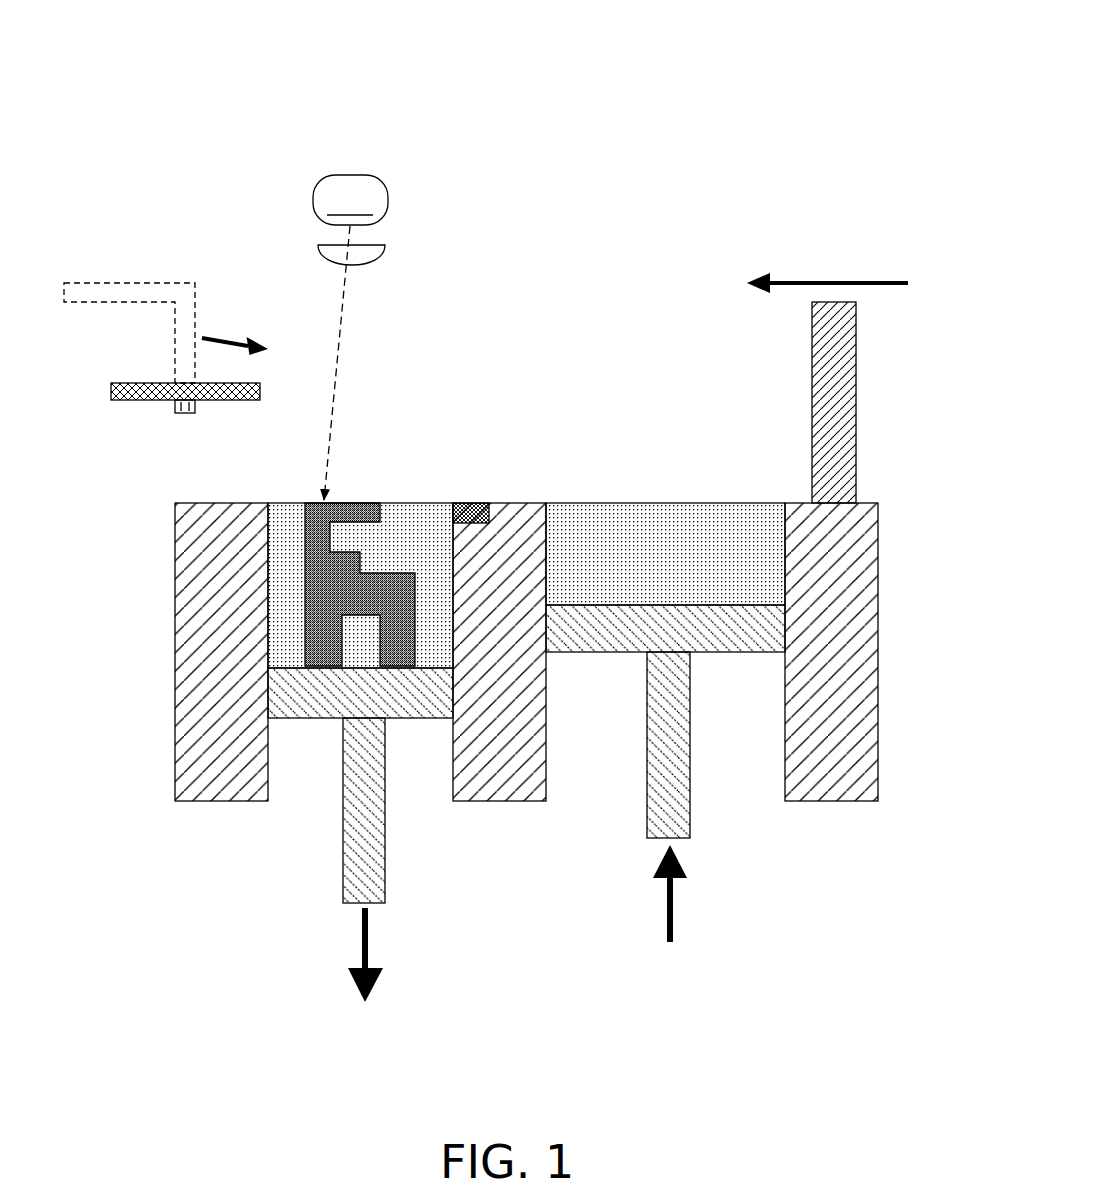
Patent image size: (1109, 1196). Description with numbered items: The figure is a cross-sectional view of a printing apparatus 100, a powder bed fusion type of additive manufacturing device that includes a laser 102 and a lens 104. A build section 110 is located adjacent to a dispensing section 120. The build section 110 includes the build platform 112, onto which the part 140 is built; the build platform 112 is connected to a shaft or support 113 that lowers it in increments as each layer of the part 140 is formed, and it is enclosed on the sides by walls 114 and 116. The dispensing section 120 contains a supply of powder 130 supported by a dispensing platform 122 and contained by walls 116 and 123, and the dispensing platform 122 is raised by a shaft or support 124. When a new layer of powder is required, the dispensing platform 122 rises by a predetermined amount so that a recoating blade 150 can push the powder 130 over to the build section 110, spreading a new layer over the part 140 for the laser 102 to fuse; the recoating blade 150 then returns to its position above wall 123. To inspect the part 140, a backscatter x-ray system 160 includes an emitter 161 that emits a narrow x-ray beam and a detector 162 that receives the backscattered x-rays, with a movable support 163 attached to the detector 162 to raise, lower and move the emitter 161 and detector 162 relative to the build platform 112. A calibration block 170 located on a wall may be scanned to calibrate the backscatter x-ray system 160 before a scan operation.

The printing apparatus 100 is at (758, 86).
The laser 102 is at (350, 337).
The lens 104 is at (320, 250).
The build section 110 is at (305, 805).
The build platform 112 is at (410, 719).
The shaft or support 113 is at (342, 893).
The wall 114 is at (176, 735).
The wall 116 is at (517, 801).
The dispensing section 120 is at (739, 804).
The dispensing platform 122 is at (590, 633).
The wall 123 is at (879, 660).
The shaft or support 124 is at (690, 712).
The powder 130 is at (283, 513).
The part 140 is at (383, 612).
The recoating blade 150 is at (812, 357).
The backscatter x-ray system 160 is at (164, 195).
The emitter 161 is at (182, 413).
The detector 162 is at (112, 399).
The movable support 163 is at (118, 291).
The calibration block 170 is at (475, 500).